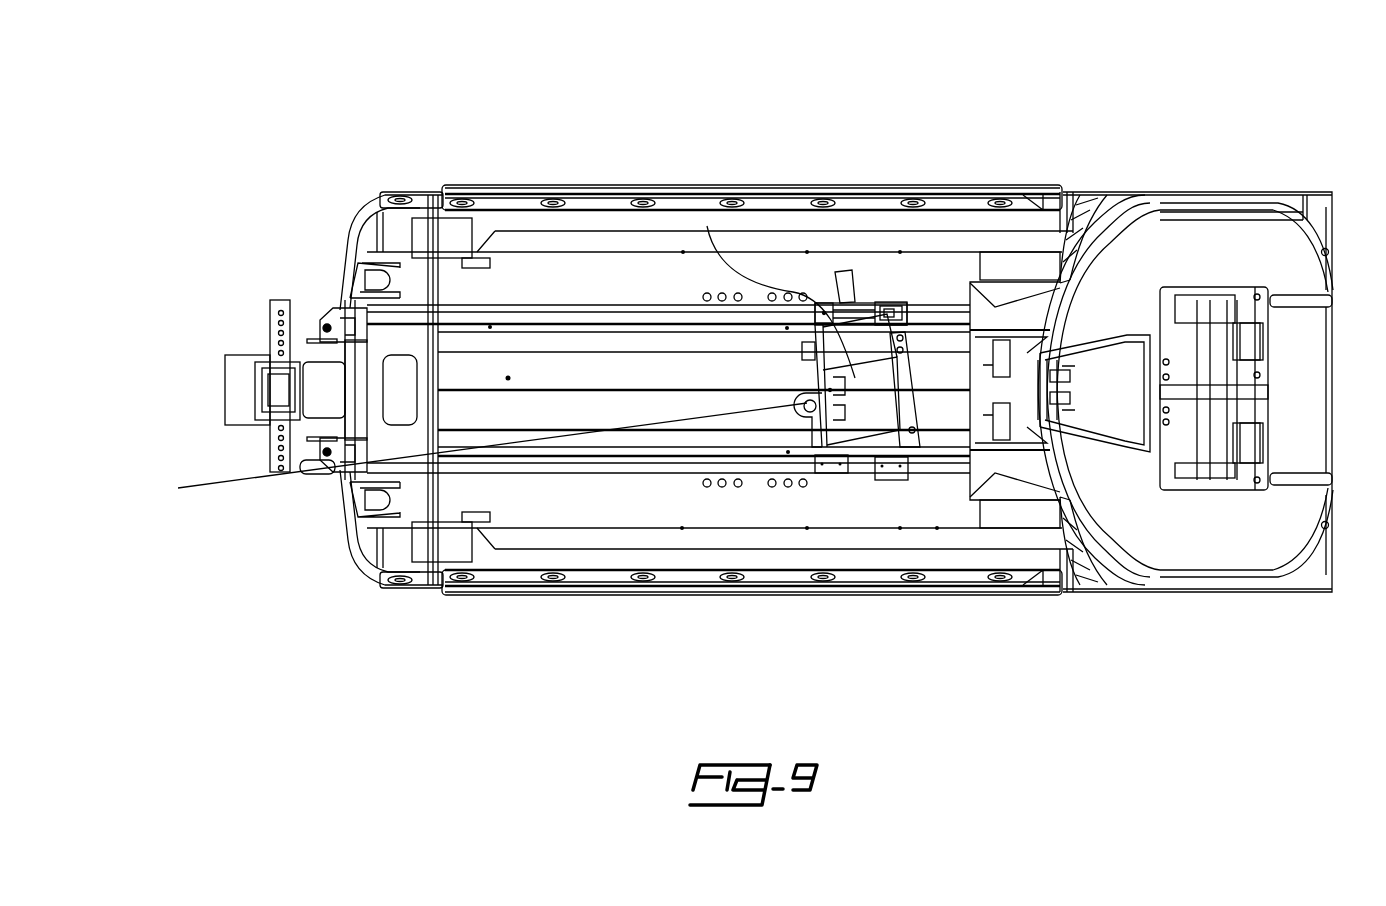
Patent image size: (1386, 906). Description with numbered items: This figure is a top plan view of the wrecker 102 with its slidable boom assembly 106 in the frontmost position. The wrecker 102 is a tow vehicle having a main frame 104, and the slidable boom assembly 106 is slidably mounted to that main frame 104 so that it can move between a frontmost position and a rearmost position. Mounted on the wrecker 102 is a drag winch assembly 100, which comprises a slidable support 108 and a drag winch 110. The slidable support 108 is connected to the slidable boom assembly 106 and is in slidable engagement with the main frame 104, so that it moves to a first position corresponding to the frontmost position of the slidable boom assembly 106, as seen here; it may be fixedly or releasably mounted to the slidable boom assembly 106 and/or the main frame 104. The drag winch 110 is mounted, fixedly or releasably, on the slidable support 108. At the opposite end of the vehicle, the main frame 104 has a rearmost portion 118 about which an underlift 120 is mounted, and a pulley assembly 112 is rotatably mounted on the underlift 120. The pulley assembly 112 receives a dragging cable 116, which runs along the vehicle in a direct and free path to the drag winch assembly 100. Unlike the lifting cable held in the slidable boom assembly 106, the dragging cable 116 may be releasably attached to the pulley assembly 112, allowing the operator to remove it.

The drag winch assembly 100 is at (868, 282).
The wrecker 102 is at (835, 168).
The main frame 104 is at (480, 187).
The slidable boom assembly 106 is at (1210, 612).
The slidable support 108 is at (900, 298).
The drag winch 110 is at (707, 226).
The pulley assembly 112 is at (324, 510).
The dragging cable 116 is at (582, 436).
The rearmost portion 118 is at (212, 395).
The underlift 120 is at (303, 390).